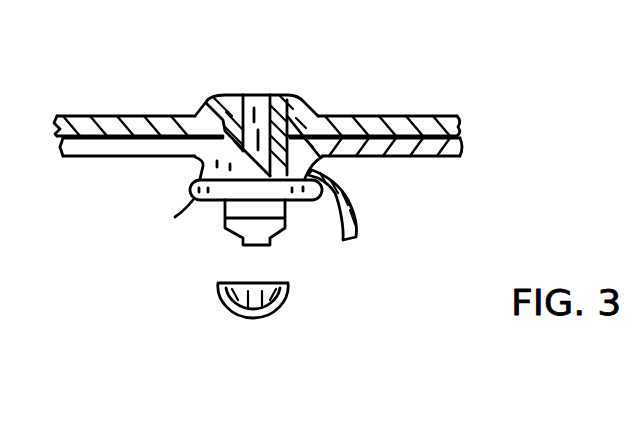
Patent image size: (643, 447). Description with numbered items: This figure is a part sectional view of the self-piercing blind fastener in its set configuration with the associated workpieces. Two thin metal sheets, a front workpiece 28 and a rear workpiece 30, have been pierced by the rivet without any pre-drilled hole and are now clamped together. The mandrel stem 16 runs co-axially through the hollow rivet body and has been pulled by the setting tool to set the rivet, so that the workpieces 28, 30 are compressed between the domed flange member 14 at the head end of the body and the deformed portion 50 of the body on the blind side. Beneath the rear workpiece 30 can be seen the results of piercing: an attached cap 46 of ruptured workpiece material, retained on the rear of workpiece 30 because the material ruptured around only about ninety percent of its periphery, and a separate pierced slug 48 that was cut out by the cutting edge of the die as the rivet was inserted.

The domed flange member 14 is at (295, 103).
The mandrel stem 16 is at (258, 108).
The workpiece 28 is at (432, 128).
The workpiece 30 is at (448, 158).
The attached cap 46 is at (360, 226).
The pierced slug 48 is at (283, 298).
The deformed portion 50 is at (207, 198).